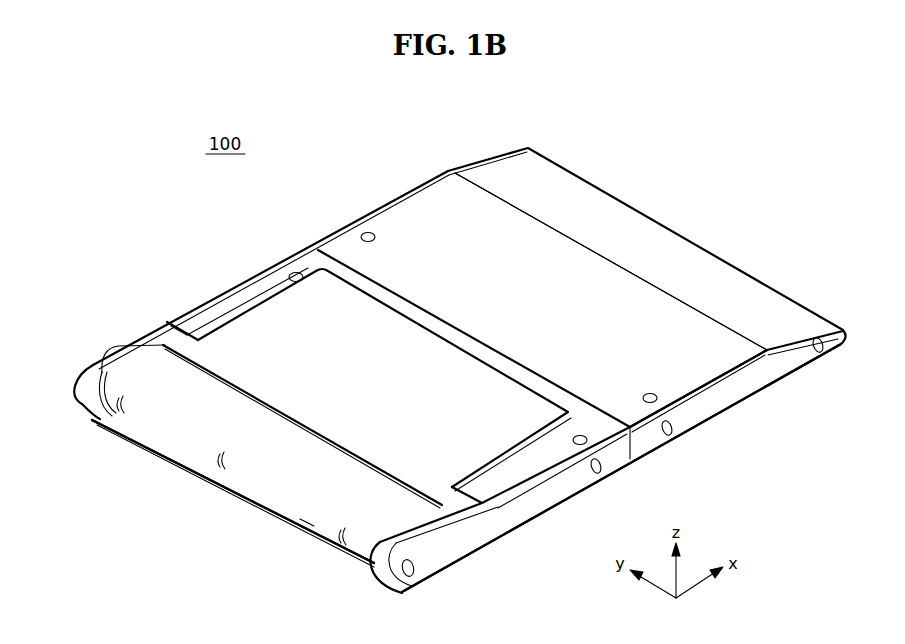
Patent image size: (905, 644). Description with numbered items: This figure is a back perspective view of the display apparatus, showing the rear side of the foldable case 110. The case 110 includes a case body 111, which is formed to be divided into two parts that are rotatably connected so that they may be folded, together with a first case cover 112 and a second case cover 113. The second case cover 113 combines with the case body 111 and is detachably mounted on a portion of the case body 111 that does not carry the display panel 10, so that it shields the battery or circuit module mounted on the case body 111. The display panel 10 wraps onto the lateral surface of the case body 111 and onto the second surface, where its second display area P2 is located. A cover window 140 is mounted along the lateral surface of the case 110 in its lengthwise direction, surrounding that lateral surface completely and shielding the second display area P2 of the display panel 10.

The case 110 is at (672, 203).
The case body 111 is at (557, 255).
The first case cover 112 is at (723, 398).
The second case cover 113 is at (287, 328).
The display panel 10 is at (197, 452).
The cover window 140 is at (237, 497).
The second display area P2 is at (307, 523).